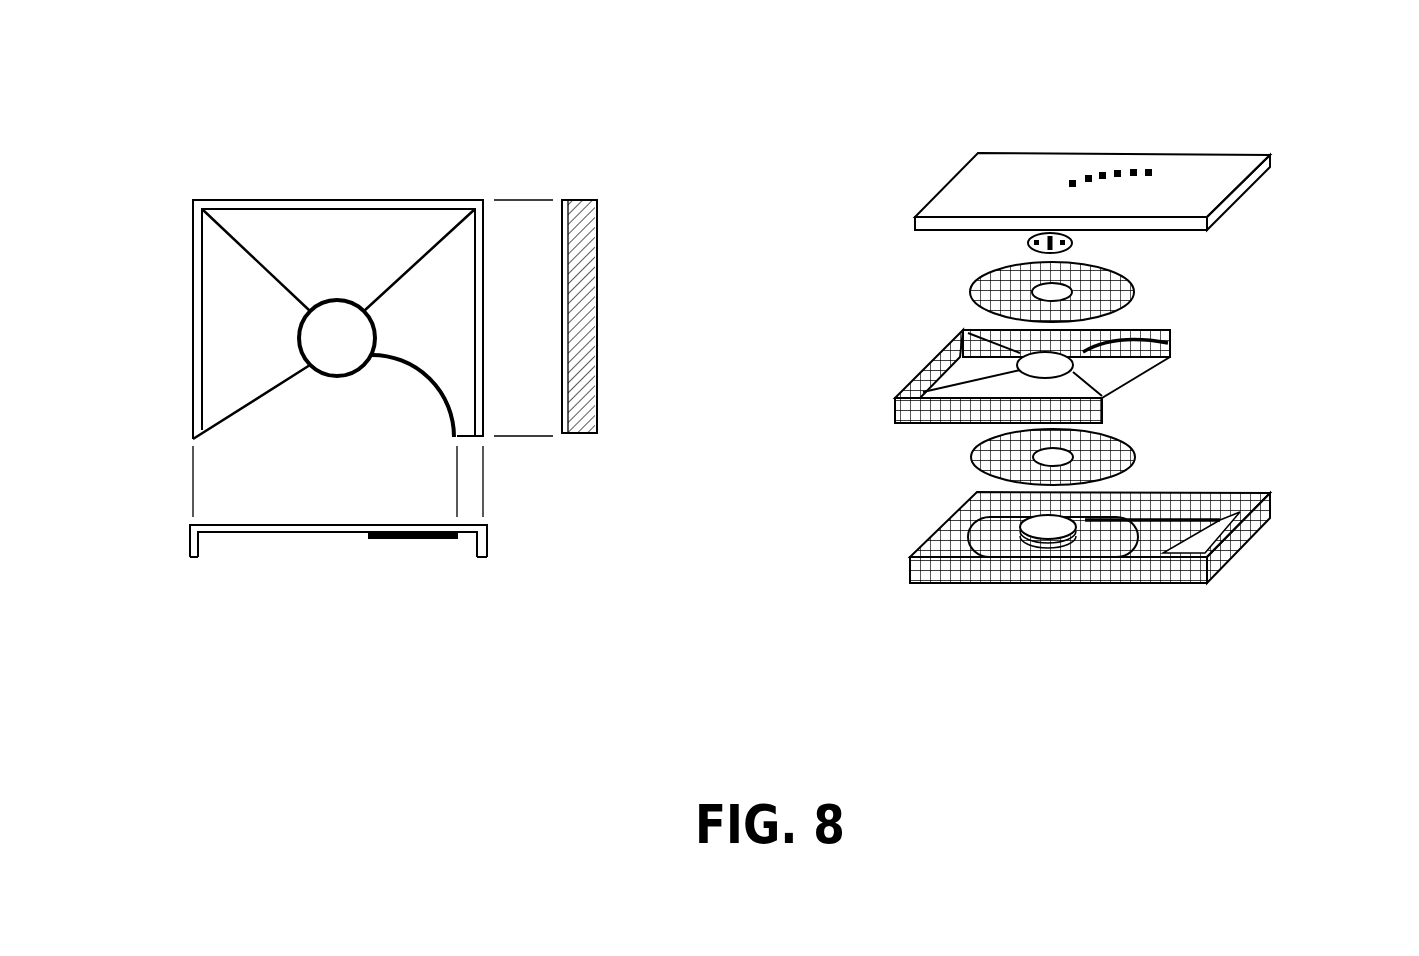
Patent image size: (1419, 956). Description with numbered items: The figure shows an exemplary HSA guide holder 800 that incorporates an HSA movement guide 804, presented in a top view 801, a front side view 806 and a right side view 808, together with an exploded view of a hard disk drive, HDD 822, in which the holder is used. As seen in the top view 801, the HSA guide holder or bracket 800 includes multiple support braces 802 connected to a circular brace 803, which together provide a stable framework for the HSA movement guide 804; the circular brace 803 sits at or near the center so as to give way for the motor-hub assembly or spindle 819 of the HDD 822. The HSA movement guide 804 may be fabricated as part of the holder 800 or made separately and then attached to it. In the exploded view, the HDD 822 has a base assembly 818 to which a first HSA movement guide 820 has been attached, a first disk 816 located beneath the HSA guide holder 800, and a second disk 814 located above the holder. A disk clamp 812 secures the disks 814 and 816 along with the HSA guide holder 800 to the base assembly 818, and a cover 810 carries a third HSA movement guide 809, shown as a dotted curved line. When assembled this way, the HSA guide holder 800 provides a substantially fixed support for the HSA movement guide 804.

The HSA guide holder 800 is at (895, 366).
The top view 801 is at (178, 330).
The support braces 802 is at (226, 415).
The circular brace 803 is at (299, 340).
The HSA movement guide 804 is at (410, 372).
The front side view 806 is at (413, 580).
The right side view 808 is at (590, 183).
The third HSA movement guide 809 is at (1118, 172).
The cover 810 is at (945, 188).
The disk clamp 812 is at (1025, 241).
The second disk 814 is at (1135, 290).
The first disk 816 is at (975, 455).
The base assembly 818 is at (960, 551).
The motor-hub assembly (spindle) 819 is at (1048, 590).
The first HSA movement guide 820 is at (1150, 516).
The HDD 822 is at (1342, 169).